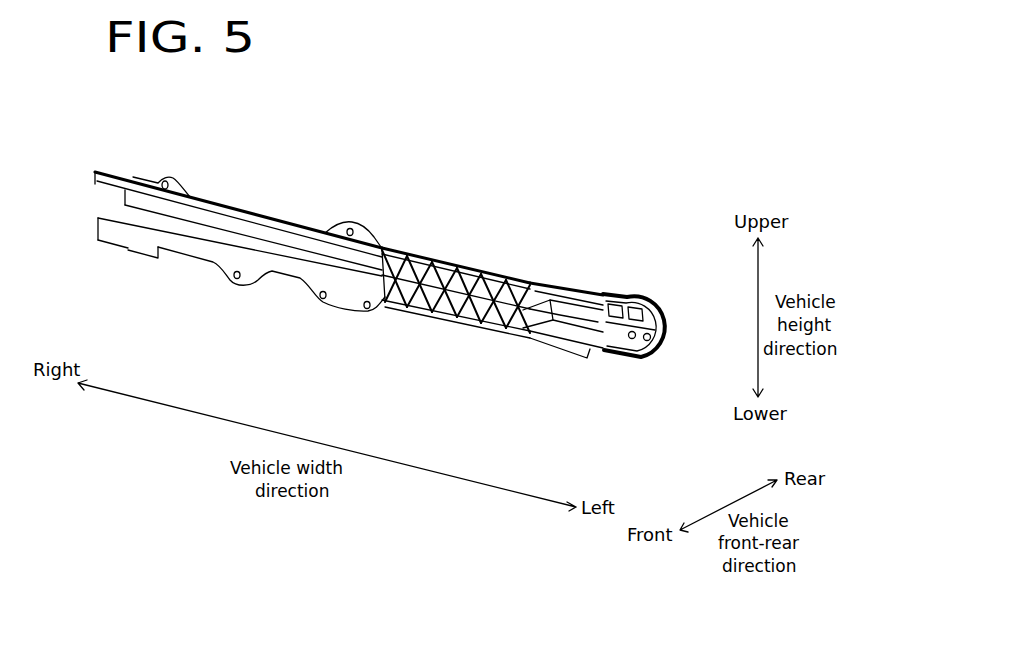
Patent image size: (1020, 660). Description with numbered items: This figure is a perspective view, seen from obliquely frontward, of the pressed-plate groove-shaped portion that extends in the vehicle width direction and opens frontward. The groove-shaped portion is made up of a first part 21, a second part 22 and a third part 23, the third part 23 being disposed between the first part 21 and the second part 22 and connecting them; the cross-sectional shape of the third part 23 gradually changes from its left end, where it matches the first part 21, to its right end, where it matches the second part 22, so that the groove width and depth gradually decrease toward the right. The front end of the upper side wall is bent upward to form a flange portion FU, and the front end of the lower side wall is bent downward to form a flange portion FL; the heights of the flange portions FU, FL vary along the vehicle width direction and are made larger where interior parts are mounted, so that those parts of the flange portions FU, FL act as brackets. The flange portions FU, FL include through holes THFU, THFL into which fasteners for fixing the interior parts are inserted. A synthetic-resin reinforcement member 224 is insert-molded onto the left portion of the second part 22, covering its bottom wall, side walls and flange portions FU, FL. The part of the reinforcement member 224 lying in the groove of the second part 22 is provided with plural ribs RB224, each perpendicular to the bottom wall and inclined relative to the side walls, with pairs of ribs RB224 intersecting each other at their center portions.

The first part 21 is at (631, 302).
The second part 22 is at (258, 215).
The third part 23 is at (565, 288).
The reinforcement member 224 is at (458, 301).
The flange portion FU is at (376, 232).
The flange portion FL is at (355, 314).
The through hole THFU is at (350, 228).
The through hole THFL is at (239, 280).
The ribs RB224 is at (513, 231).